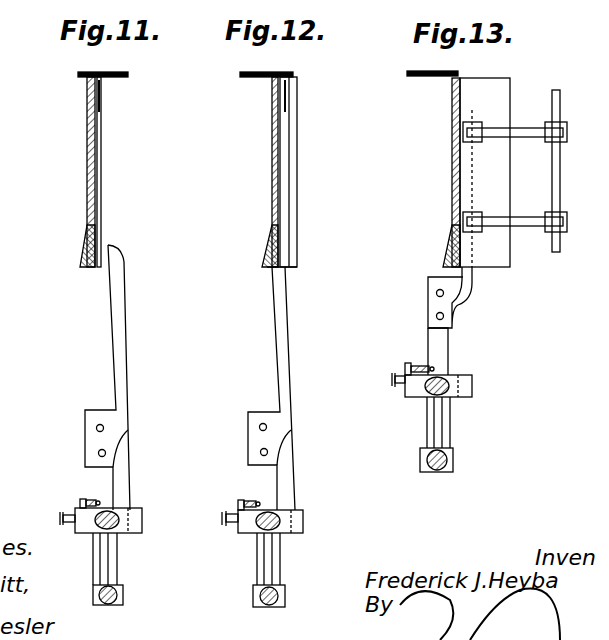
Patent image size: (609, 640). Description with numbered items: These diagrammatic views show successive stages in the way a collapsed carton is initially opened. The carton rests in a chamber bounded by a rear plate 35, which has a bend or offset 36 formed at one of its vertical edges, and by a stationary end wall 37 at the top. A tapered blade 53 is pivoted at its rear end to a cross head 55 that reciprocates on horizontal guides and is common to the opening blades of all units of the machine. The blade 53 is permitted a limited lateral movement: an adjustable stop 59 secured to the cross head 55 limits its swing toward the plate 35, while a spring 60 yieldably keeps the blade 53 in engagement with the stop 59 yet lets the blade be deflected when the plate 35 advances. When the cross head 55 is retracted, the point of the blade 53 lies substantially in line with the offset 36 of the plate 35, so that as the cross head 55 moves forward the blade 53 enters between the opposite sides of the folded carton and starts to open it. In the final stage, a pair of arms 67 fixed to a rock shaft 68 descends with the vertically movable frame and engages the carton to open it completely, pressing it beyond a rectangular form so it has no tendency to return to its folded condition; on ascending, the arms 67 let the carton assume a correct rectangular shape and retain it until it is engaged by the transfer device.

In FIG. 11, the rear plate 35 is at (87, 180).
In FIG. 12, the rear plate 35 is at (272, 187).
In FIG. 13, the rear plate 35 is at (452, 190).
In FIG. 11, the bend or offset 36 is at (80, 258).
In FIG. 12, the bend or offset 36 is at (263, 258).
In FIG. 13, the bend or offset 36 is at (443, 258).
In FIG. 11, the end wall 37 is at (92, 72).
In FIG. 12, the end wall 37 is at (258, 72).
In FIG. 13, the end wall 37 is at (428, 71).
In FIG. 11, the blade 53 is at (124, 330).
In FIG. 12, the blade 53 is at (288, 325).
In FIG. 13, the blade 53 is at (472, 283).
In FIG. 11, the cross head 55 is at (120, 533).
In FIG. 12, the cross head 55 is at (283, 533).
In FIG. 13, the cross head 55 is at (460, 397).
In FIG. 11, the adjustable stop 59 is at (60, 517).
In FIG. 12, the adjustable stop 59 is at (222, 518).
In FIG. 13, the adjustable stop 59 is at (392, 380).
In FIG. 11, the spring 60 is at (88, 498).
In FIG. 12, the spring 60 is at (248, 499).
In FIG. 13, the spring 60 is at (415, 363).
In FIG. 13, the arms 67 is at (518, 128).
In FIG. 13, the rock shaft 68 is at (560, 183).